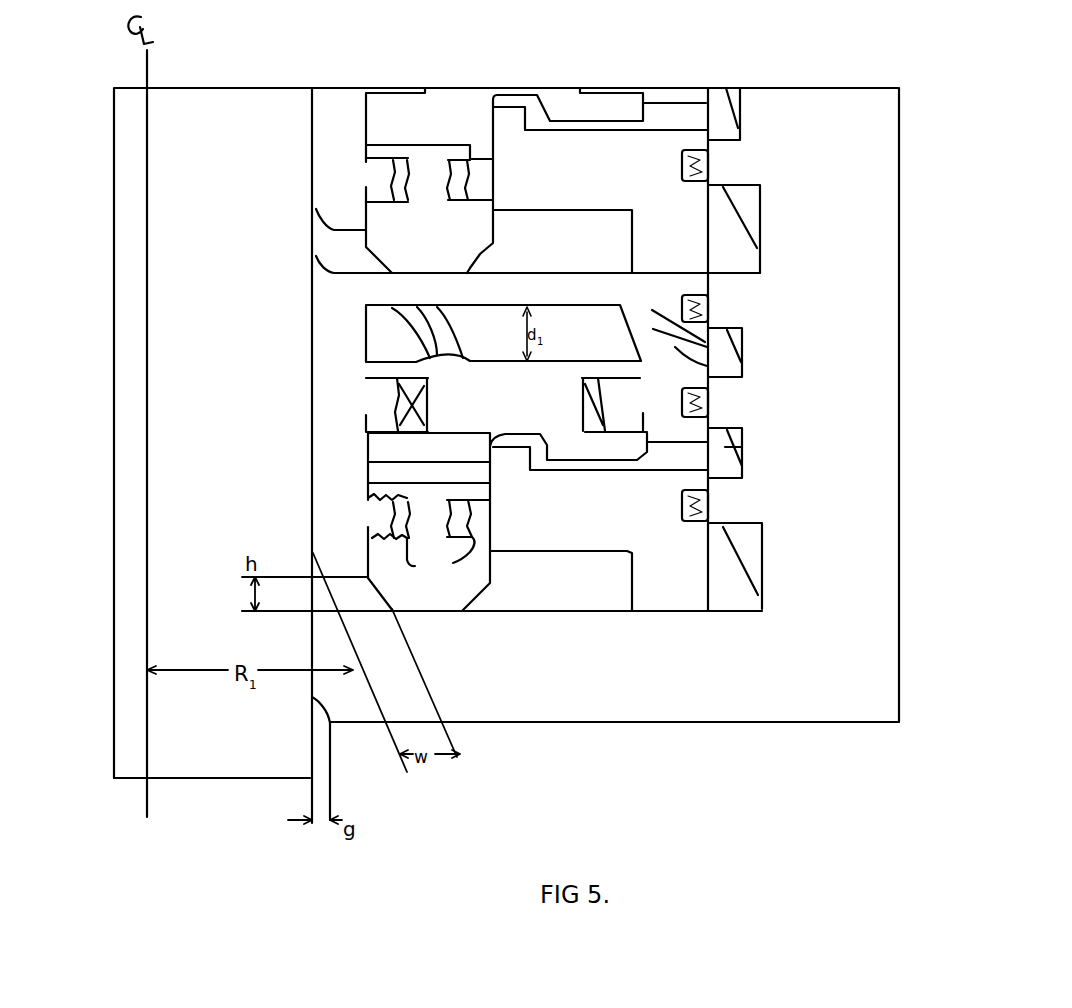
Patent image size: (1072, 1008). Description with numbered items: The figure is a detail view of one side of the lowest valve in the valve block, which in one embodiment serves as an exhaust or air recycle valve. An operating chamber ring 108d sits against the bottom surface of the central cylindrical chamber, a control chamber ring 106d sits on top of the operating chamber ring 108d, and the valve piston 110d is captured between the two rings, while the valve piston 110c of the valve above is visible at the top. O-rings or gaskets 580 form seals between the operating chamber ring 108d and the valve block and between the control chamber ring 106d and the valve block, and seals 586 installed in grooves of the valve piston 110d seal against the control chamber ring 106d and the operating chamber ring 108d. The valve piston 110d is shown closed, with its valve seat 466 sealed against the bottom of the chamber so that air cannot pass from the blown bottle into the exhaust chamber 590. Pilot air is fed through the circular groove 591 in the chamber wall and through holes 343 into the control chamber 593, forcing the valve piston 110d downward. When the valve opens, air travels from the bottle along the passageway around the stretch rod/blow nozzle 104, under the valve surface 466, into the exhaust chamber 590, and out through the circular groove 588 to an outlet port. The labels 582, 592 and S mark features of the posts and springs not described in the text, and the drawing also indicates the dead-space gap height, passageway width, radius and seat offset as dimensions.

The stretch rod/blow nozzle 104 is at (212, 783).
The control chamber ring 106d is at (708, 276).
The operating chamber ring 108d is at (708, 590).
The valve piston 110c is at (367, 218).
The valve piston 110d is at (613, 461).
The holes 343 is at (742, 367).
The valve seat 466 is at (438, 612).
The O-rings or gaskets 580 is at (710, 160).
The spring post 582 is at (402, 392).
The seals 586 is at (440, 539).
The circular groove 588 is at (725, 560).
The exhaust chamber 590 is at (572, 589).
The circular groove 591 is at (742, 340).
The wall block 592 is at (742, 447).
The control chamber 593 is at (583, 318).
The spring S is at (592, 404).